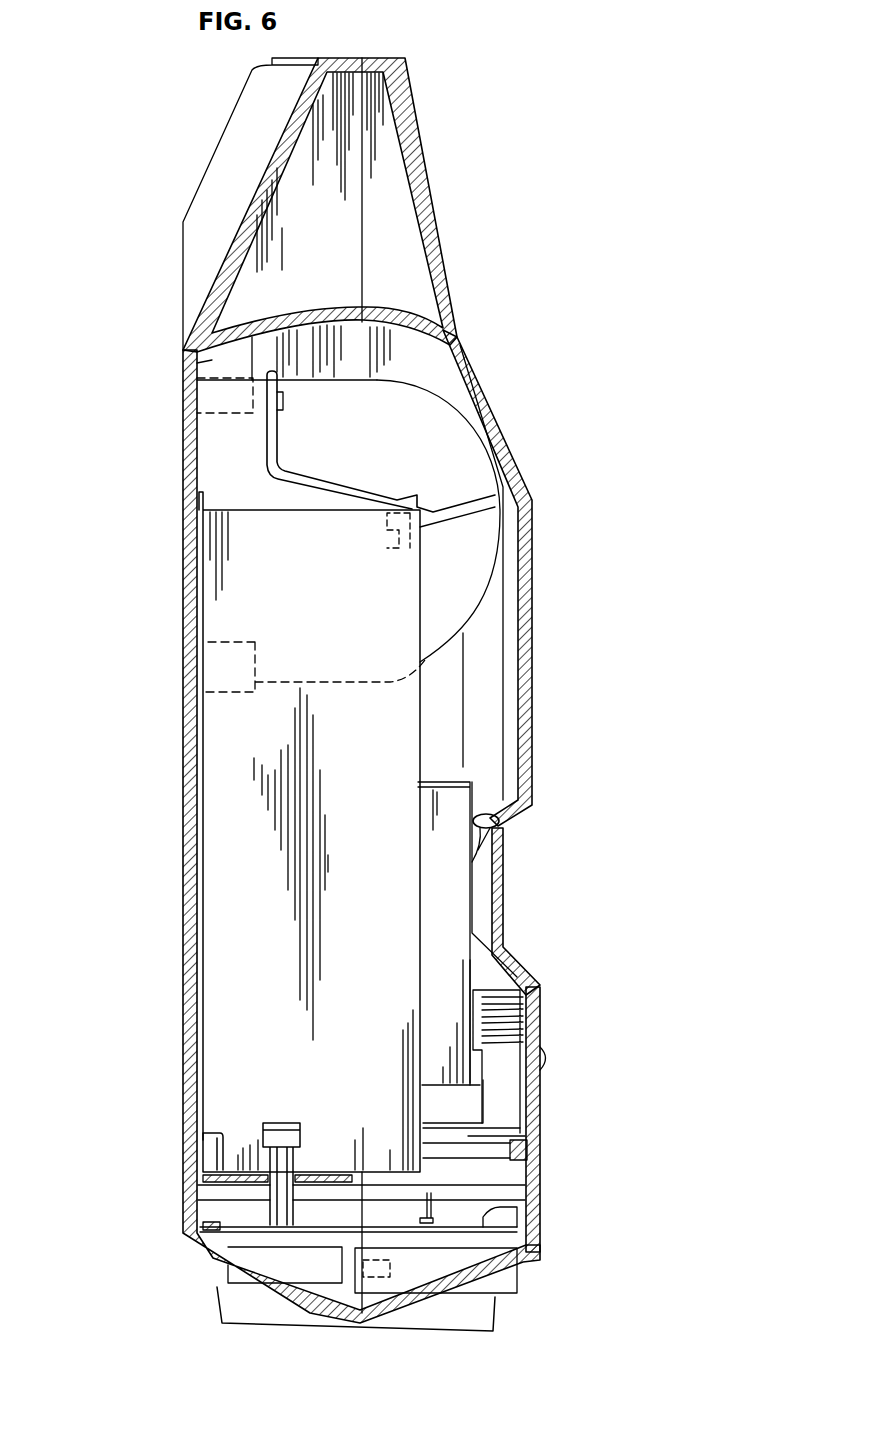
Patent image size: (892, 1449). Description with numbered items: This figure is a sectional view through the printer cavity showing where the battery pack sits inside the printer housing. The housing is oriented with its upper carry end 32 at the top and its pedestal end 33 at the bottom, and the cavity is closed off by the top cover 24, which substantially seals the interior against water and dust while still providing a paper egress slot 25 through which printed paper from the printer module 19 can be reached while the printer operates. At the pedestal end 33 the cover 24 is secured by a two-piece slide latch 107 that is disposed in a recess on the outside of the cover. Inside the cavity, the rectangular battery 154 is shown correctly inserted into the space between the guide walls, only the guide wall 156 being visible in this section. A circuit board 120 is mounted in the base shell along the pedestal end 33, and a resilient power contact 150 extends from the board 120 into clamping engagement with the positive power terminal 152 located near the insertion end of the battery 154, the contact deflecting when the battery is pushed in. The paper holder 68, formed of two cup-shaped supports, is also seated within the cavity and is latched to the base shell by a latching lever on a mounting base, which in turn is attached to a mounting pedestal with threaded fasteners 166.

The upper carry end 32 is at (397, 58).
The threaded fasteners 166 is at (183, 375).
The guide wall 156 is at (400, 500).
The paper holder 68 is at (483, 543).
The top cover 24 is at (532, 735).
The paper egress slot 25 is at (500, 826).
The printer module 19 is at (447, 917).
The two-piece slide latch 107 is at (547, 1058).
The battery 154 is at (227, 897).
The positive power terminal 152 is at (270, 1138).
The power contact 150 is at (282, 1196).
The circuit board 120 is at (215, 1265).
The pedestal end 33 is at (460, 1307).